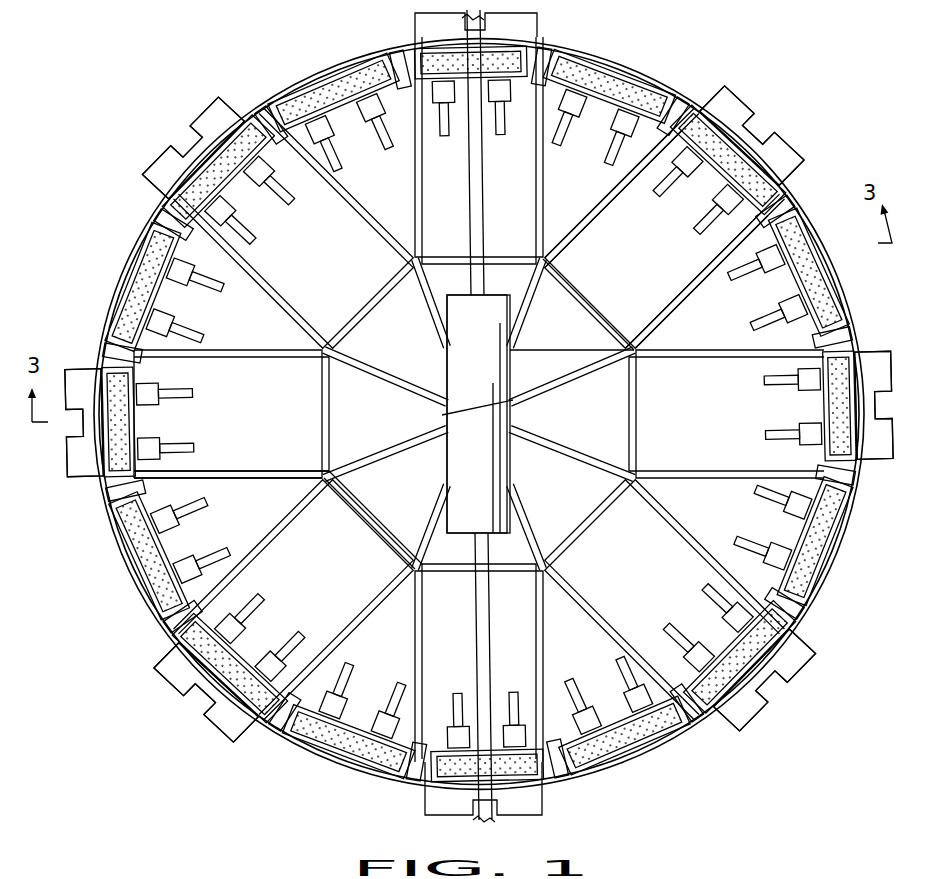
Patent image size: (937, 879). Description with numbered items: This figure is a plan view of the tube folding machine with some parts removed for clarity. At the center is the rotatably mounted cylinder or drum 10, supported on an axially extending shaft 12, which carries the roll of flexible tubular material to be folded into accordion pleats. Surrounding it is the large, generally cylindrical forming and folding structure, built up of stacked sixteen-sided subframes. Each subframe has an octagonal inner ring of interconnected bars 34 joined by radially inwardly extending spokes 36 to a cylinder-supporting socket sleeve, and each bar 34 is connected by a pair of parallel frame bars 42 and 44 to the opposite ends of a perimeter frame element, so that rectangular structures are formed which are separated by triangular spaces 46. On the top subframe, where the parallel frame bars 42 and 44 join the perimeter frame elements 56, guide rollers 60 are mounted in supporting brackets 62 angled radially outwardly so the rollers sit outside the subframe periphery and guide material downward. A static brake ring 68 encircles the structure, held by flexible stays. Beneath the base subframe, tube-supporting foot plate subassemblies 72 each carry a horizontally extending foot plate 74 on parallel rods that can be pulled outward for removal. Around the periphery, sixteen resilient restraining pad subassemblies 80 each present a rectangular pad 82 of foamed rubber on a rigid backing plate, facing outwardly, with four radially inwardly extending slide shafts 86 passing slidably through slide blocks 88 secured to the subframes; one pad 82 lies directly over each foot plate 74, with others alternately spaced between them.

The cylinder or drum 10 is at (488, 349).
The axially extending shaft 12 is at (470, 185).
The interconnected bars 34 is at (366, 518).
The radially inwardly extending spokes 36 is at (378, 380).
The parallel frame bar 42 is at (250, 363).
The parallel frame bar 44 is at (250, 480).
The triangular spaces 46 is at (590, 199).
The perimeter frame elements 56 is at (608, 722).
The guide rollers 60 is at (560, 60).
The supporting brackets 62 is at (676, 690).
The static brake ring 68 is at (640, 70).
The tube-supporting foot plate subassemblies 72 is at (228, 100).
The foot plate 74 is at (215, 100).
The resilient restraining pad subassemblies 80 is at (840, 545).
The rectangular pad 82 is at (348, 80).
The slide shafts 86 is at (285, 185).
The slide blocks 88 is at (262, 175).